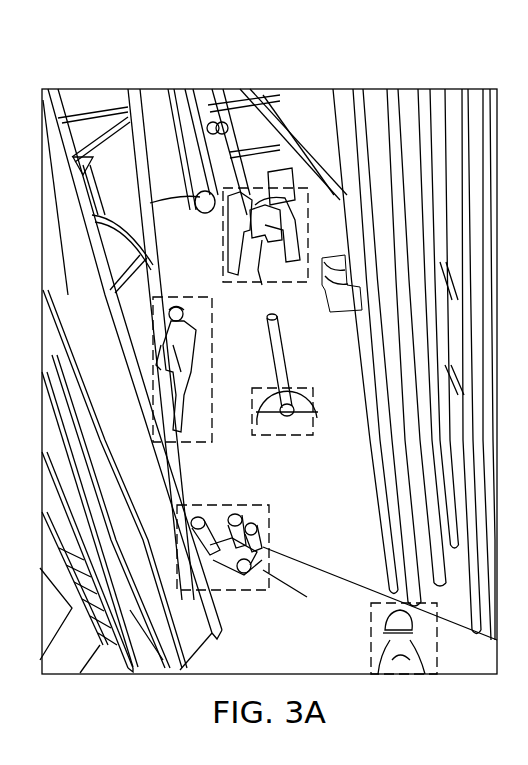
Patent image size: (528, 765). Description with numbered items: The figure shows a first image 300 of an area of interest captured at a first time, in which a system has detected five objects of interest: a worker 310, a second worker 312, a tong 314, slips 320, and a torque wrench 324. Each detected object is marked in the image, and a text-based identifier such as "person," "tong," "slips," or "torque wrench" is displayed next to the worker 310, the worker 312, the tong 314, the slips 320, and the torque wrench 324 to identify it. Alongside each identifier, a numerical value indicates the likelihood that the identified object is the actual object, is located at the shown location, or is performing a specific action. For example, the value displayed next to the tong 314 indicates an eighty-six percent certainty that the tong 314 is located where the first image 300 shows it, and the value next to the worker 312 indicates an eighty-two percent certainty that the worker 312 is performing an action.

The first image 300 is at (196, 58).
The worker 310 is at (175, 298).
The worker 312 is at (372, 613).
The tong 314 is at (224, 506).
The slips 320 is at (302, 387).
The torque wrench 324 is at (268, 283).